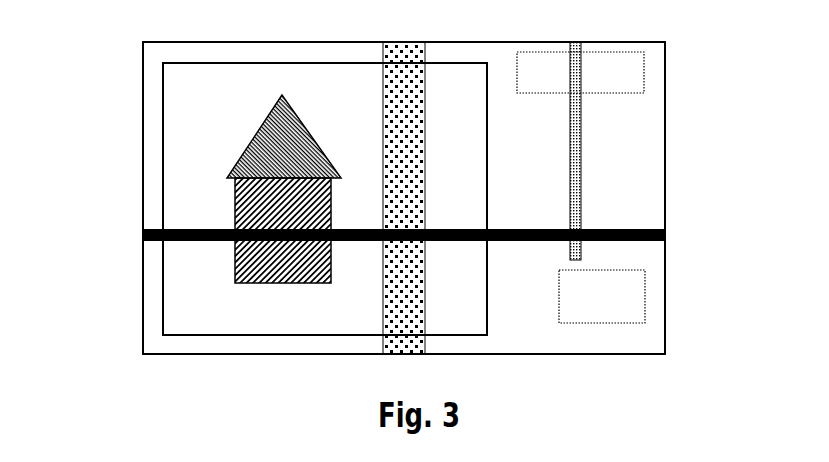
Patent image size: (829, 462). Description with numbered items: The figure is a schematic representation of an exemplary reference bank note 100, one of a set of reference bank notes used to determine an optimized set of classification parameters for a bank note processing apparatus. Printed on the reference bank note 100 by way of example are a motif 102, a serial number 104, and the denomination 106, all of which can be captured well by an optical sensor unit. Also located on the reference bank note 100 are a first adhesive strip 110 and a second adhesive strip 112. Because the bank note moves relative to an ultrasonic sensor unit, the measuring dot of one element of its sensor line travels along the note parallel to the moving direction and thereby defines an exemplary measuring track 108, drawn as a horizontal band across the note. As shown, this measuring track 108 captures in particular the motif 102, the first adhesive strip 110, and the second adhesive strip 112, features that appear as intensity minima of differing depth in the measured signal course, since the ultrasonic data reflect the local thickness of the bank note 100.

The reference bank note 100 is at (142, 97).
The motif 102 is at (242, 148).
The serial number 104 is at (645, 72).
The denomination 106 is at (645, 292).
The measuring track 108 is at (143, 232).
The first adhesive strip 110 is at (425, 167).
The second adhesive strip 112 is at (582, 188).